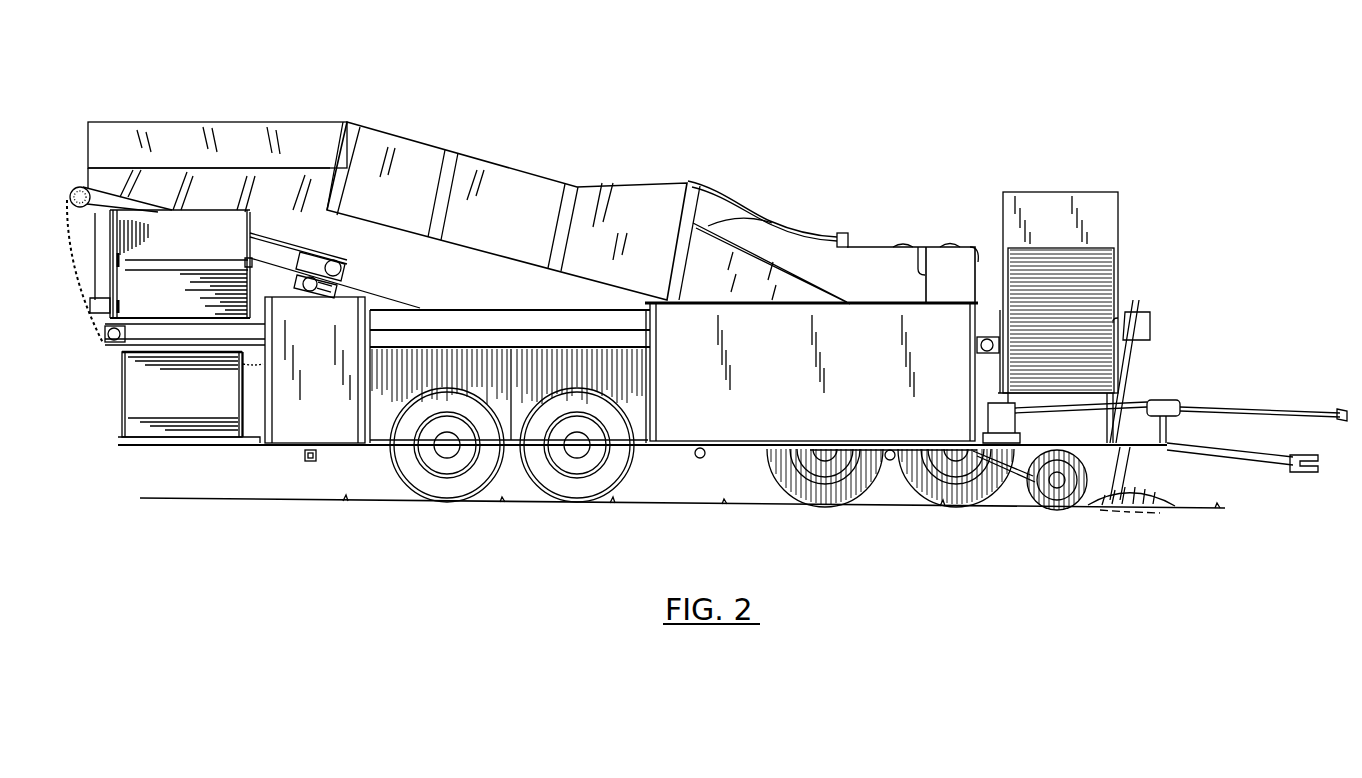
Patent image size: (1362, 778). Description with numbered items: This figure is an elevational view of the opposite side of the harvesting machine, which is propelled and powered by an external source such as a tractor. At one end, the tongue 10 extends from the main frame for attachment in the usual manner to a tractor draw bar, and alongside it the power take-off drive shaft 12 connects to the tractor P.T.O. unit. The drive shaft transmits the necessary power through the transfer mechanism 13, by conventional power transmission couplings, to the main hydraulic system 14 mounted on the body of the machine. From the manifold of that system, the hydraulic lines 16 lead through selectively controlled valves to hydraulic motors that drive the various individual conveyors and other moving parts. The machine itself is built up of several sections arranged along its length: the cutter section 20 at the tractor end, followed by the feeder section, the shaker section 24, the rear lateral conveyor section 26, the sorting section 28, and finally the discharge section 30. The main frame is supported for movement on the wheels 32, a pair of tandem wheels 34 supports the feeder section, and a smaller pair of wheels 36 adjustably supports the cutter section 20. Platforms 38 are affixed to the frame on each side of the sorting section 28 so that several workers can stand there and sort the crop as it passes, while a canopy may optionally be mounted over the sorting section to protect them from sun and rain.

The tongue 10 is at (1238, 460).
The power take-off drive shaft 12 is at (1290, 415).
The transfer mechanism 13 is at (992, 421).
The main hydraulic system 14 is at (924, 285).
The hydraulic lines 16 is at (773, 222).
The cutter section 20 is at (1143, 384).
The shaker section 24 is at (540, 172).
The rear lateral conveyor section 26 is at (101, 350).
The sorting section 28 is at (522, 305).
The discharge section 30 is at (1128, 268).
The wheels 32 is at (565, 485).
The tandem wheels 34 is at (945, 497).
The smaller pair of wheels 36 is at (1056, 510).
The platforms 38 is at (282, 446).